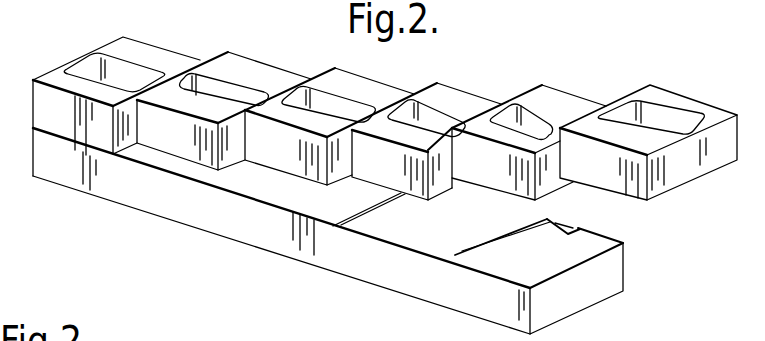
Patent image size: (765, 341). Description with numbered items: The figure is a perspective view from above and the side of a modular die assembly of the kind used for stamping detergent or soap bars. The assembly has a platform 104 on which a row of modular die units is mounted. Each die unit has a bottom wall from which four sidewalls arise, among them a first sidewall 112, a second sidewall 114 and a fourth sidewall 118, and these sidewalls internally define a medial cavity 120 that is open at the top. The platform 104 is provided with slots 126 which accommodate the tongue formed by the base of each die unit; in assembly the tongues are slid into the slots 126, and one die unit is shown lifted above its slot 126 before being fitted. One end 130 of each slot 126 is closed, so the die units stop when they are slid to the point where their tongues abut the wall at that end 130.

The platform 104 is at (585, 294).
The first sidewall 112 is at (648, 146).
The second sidewall 114 is at (677, 172).
The fourth sidewall 118 is at (645, 88).
The medial cavity 120 is at (537, 125).
The slot 126 is at (588, 221).
The closed end 130 is at (440, 311).